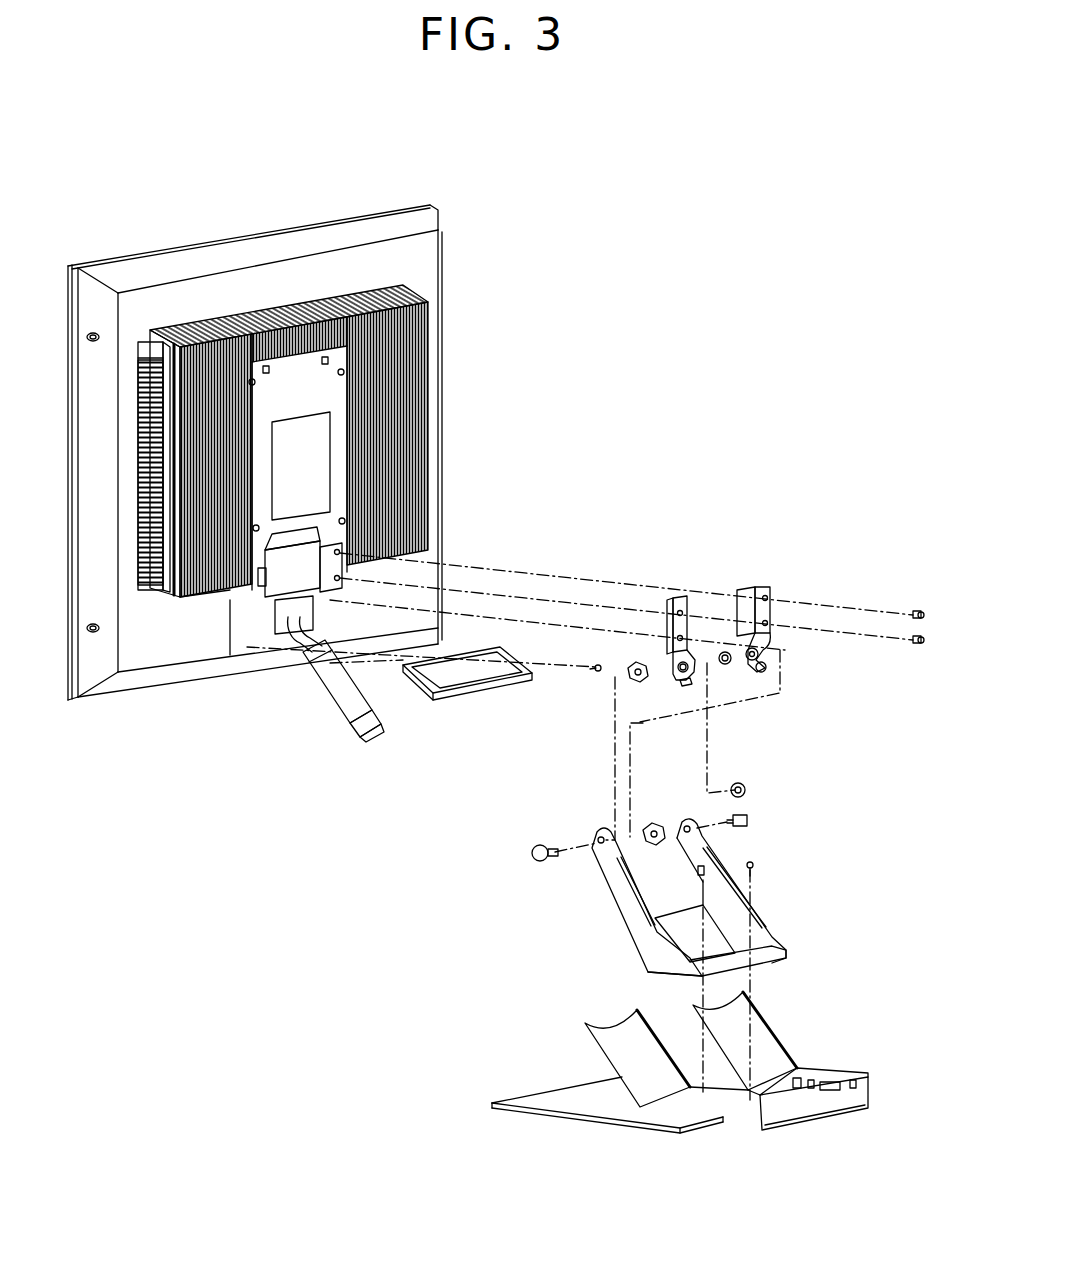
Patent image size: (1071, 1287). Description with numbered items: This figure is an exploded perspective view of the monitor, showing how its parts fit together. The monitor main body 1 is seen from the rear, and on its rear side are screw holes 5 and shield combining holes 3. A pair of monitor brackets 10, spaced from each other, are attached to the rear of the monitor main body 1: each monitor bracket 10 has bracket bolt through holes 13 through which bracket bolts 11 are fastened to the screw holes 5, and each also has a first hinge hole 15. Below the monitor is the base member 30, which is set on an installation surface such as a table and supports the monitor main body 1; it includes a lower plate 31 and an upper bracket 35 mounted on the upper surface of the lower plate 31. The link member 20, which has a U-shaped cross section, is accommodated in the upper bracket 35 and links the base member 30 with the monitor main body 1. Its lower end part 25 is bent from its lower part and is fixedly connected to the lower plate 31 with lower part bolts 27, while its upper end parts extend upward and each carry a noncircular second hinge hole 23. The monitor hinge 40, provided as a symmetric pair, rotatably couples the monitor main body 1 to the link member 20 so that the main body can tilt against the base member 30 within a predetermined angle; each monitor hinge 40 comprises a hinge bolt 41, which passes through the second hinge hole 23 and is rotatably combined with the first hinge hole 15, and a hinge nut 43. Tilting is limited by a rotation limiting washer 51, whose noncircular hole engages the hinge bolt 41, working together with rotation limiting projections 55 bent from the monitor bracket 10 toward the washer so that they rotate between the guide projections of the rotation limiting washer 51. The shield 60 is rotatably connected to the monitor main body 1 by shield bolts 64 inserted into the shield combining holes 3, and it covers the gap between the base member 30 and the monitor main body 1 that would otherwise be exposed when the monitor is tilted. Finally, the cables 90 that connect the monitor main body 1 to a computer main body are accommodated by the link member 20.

The monitor main body 1 is at (447, 447).
The shield combining hole 3 is at (247, 647).
The screw hole 5 is at (330, 557).
The monitor bracket 10 is at (684, 587).
The bracket bolt 11 is at (913, 650).
The bracket bolt through hole 13 is at (763, 623).
The first hinge hole 15 is at (727, 664).
The link member 20 is at (771, 935).
The second hinge hole 23 is at (597, 847).
The lower end part 25 is at (770, 958).
The lower part bolt 27 is at (752, 867).
The base member 30 is at (505, 1018).
The lower plate 31 is at (577, 1095).
The upper bracket 35 is at (585, 1033).
The monitor hinge 40 is at (669, 815).
The hinge bolt 41 is at (538, 848).
The hinge nut 43 is at (755, 660).
The rotation limiting washer 51 is at (637, 676).
The rotation limiting projection 55 is at (683, 682).
The shield 60 is at (423, 702).
The shield bolt 64 is at (598, 665).
The cable 90 is at (330, 703).